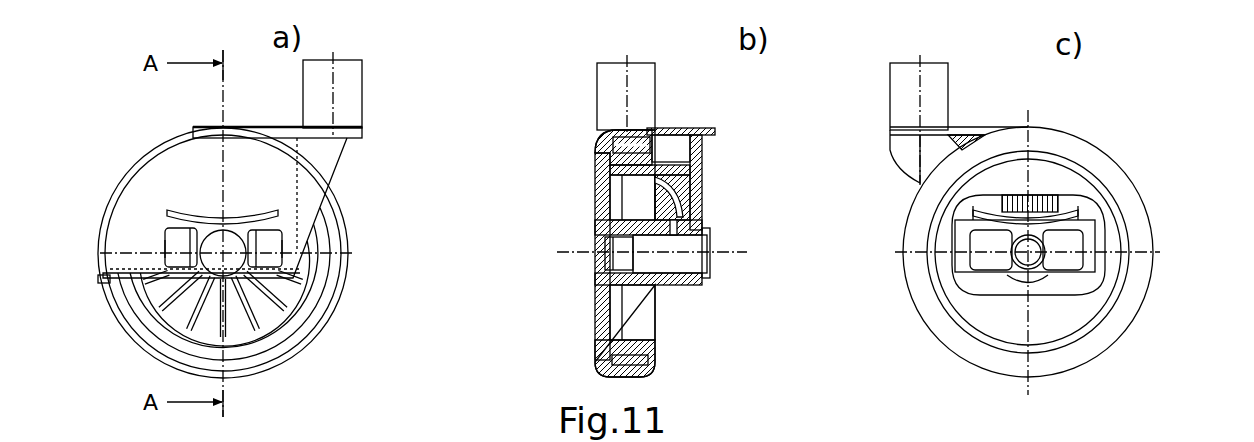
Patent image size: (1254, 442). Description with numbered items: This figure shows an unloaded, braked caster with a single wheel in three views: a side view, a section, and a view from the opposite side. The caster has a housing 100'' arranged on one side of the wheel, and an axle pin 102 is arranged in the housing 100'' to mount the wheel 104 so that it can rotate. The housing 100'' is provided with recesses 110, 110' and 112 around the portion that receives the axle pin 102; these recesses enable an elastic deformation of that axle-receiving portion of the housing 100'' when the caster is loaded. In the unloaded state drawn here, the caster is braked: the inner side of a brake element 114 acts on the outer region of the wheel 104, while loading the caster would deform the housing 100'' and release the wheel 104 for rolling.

The housing 100'' is at (570, 162).
The axle pin 102 is at (230, 243).
The wheel 104 is at (330, 238).
The recess 110 is at (676, 271).
The recess 110' is at (663, 198).
The recess 112 is at (183, 210).
The brake element 114 is at (628, 130).